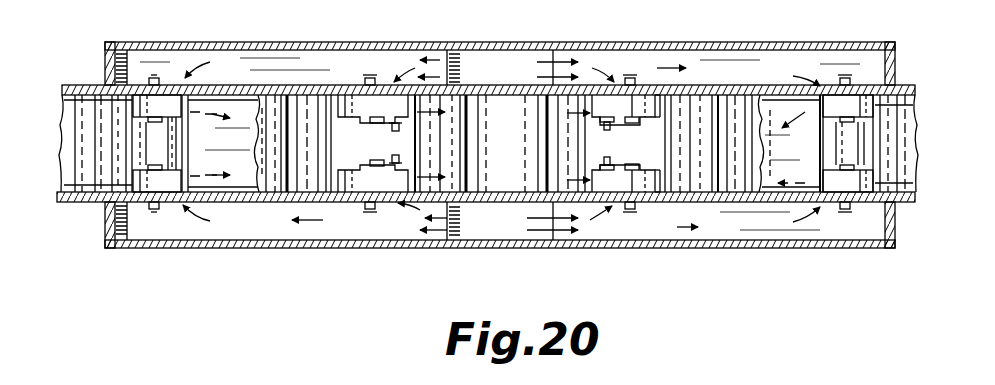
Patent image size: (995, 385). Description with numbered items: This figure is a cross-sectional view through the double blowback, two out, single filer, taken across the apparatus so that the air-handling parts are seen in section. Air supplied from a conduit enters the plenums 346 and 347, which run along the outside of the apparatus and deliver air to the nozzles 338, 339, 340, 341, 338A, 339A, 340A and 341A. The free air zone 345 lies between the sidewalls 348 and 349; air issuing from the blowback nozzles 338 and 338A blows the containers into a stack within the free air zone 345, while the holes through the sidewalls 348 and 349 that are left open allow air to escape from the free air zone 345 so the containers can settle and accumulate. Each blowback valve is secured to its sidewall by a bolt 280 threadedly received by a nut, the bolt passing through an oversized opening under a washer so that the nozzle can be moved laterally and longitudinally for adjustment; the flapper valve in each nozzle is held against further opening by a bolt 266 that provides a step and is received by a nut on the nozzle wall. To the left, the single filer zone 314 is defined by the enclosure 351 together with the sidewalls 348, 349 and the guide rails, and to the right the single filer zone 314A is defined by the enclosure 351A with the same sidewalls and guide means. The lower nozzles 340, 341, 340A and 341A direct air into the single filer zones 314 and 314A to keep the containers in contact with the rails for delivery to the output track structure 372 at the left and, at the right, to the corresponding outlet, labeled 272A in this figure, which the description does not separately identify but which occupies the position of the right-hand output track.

The bolt 266 is at (398, 159).
The pipe section 272A is at (883, 95).
The bolt 280 is at (157, 162).
The single file zone 314 is at (273, 178).
The single file zone 314A is at (752, 180).
The nozzle 338 is at (345, 100).
The nozzle 338A is at (652, 100).
The nozzle 339 is at (355, 180).
The nozzle 339A is at (655, 200).
The lower nozzle 340 is at (152, 100).
The lower nozzle 340A is at (862, 100).
The lower nozzle 341 is at (145, 185).
The lower nozzle 341A is at (858, 190).
The free air zone 345 is at (522, 161).
The plenum 346 is at (452, 42).
The plenum 347 is at (432, 250).
The sidewall 348 is at (95, 85).
The sidewall 349 is at (80, 203).
The enclosure 351 is at (245, 163).
The enclosure 351A is at (775, 123).
The output track structure 372 is at (78, 92).